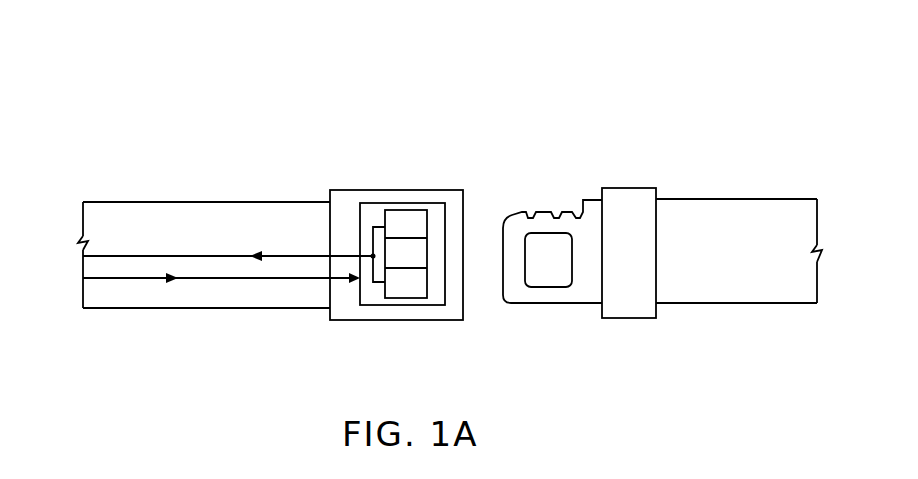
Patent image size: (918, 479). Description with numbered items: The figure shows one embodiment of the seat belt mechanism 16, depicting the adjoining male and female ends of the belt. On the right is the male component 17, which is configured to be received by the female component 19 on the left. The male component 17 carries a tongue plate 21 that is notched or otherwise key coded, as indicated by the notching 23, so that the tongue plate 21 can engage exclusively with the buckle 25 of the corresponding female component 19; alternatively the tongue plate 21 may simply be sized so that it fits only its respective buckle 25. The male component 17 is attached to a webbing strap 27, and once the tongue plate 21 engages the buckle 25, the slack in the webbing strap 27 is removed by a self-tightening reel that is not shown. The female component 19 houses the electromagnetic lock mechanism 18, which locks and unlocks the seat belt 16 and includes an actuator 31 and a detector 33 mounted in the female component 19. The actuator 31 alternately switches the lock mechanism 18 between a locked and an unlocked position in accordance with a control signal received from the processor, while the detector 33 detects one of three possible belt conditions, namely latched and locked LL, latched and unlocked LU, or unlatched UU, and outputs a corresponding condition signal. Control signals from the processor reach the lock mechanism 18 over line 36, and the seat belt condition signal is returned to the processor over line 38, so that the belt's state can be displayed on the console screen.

The seat belt 16 is at (398, 140).
The male component 17 is at (634, 178).
The electromagnetic lock mechanism 18 is at (352, 326).
The female component 19 is at (421, 184).
The tongue plate 21 is at (590, 205).
The notch or key coding 23 is at (533, 214).
The buckle 25 is at (458, 213).
The webbing strap 27 is at (720, 305).
The actuator 31 is at (377, 308).
The detector 33 is at (416, 306).
The line 36 is at (240, 281).
The line 38 is at (218, 254).